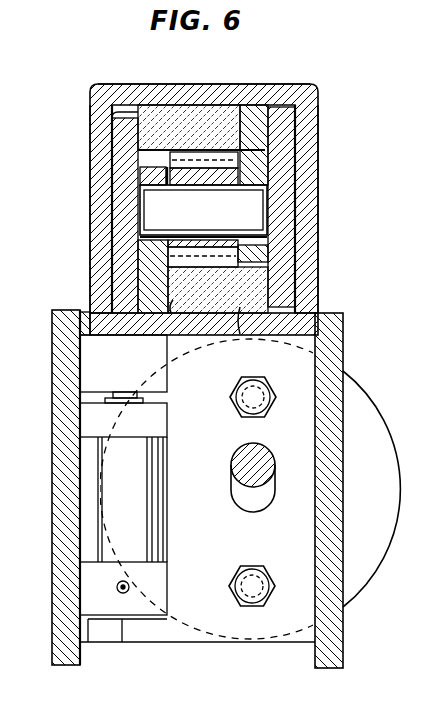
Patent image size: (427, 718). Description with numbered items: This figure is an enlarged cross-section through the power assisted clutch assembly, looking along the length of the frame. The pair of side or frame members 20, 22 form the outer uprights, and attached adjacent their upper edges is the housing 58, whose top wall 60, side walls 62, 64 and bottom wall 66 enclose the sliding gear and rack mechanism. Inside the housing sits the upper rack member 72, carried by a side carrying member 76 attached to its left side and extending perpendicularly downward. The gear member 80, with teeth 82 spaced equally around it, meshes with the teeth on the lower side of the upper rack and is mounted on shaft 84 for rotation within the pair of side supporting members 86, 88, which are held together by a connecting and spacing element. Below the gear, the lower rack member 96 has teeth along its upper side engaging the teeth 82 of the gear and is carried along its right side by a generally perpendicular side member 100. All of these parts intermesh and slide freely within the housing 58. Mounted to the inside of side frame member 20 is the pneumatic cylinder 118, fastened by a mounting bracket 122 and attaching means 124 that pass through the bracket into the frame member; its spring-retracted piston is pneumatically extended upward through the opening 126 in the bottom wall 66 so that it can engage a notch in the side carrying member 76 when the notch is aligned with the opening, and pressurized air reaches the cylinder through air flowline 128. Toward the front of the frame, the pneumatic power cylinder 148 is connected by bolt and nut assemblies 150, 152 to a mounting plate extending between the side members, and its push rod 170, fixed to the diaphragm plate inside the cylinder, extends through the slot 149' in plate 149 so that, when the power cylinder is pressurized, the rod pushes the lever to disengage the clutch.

The side frame member 20 is at (55, 400).
The side frame member 22 is at (335, 348).
The housing 58 is at (93, 84).
The top wall 60 is at (219, 85).
The side wall 62 is at (92, 206).
The side wall 64 is at (312, 218).
The bottom wall 66 is at (210, 337).
The upper rack member 72 is at (183, 112).
The side carrying member 76 is at (112, 224).
The gear member 80 is at (172, 174).
The teeth 82 is at (203, 152).
The shaft 84 is at (214, 216).
The side supporting member 86 is at (173, 334).
The side supporting member 88 is at (257, 117).
The lower rack member 96 is at (240, 334).
The side member 100 is at (288, 155).
The pneumatic cylinder 118 is at (158, 424).
The mounting bracket 122 is at (122, 642).
The attaching means 124 is at (63, 622).
The opening 126 is at (133, 327).
The air flowline 128 is at (118, 588).
The pneumatic power cylinder 148 is at (380, 571).
The plate 149 is at (250, 509).
The slot 149' is at (267, 500).
The bolt and nut assembly 150 is at (262, 412).
The bolt and nut assembly 152 is at (265, 572).
The push rod 170 is at (237, 465).